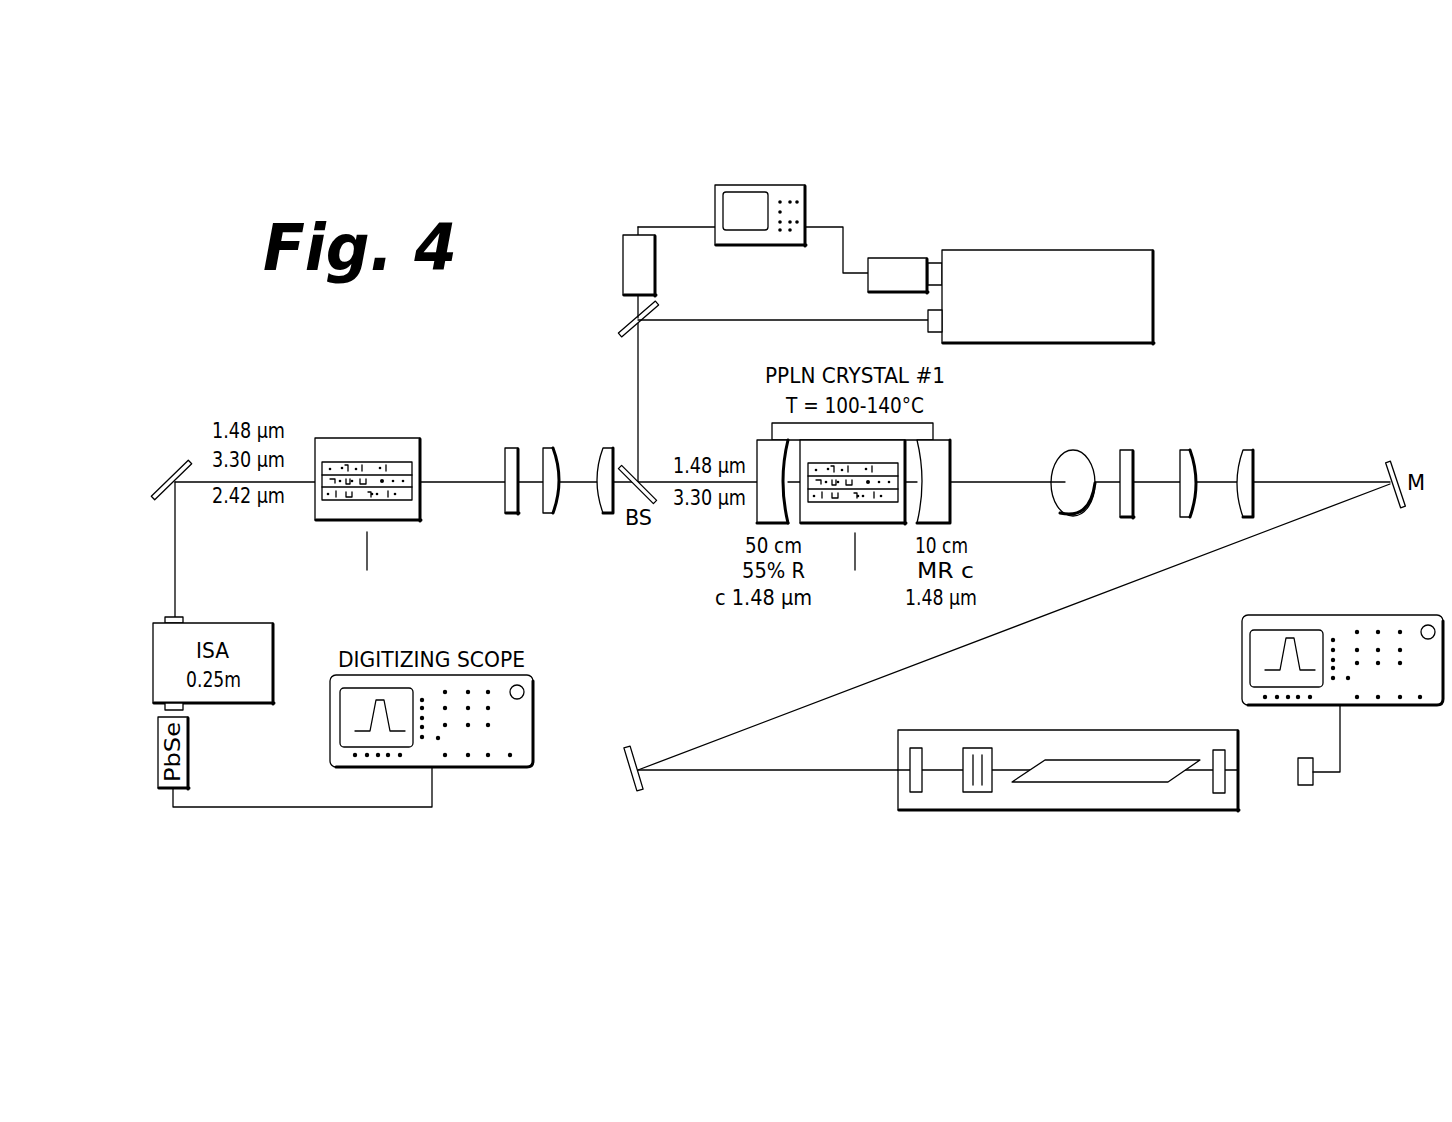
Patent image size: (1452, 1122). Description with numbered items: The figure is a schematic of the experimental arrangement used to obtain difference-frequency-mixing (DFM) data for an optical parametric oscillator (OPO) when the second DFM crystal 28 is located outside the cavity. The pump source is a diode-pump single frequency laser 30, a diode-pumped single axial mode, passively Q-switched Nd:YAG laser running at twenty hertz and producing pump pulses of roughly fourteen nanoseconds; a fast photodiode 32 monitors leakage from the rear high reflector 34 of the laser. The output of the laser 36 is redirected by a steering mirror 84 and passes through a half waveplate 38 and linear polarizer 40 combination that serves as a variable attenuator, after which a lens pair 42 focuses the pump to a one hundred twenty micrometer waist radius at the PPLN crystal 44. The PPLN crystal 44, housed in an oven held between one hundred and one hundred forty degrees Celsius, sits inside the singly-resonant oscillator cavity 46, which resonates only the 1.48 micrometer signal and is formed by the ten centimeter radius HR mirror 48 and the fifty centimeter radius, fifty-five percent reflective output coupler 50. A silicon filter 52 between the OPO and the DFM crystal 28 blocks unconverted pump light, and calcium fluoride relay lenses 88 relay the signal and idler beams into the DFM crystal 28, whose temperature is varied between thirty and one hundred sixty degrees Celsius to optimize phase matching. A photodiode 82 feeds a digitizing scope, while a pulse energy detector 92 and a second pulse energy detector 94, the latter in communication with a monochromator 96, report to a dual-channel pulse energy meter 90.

The DFM crystal 28 is at (388, 500).
The diode-pump single frequency laser 30 is at (917, 815).
The fast photodiode 32 is at (1408, 708).
The rear high reflector 34 is at (1218, 793).
The output of the laser 36 is at (875, 772).
The half waveplate 38 is at (1125, 518).
The linear polarizer 40 is at (1070, 515).
The lens pair 42 is at (1180, 517).
The PPLN crystal 44 is at (898, 470).
The singly-resonant oscillator cavity 46 is at (772, 432).
The HR mirror 48 is at (950, 503).
The output coupler 50 is at (757, 512).
The silicon filter 52 is at (512, 515).
The photodiode 82 is at (1305, 757).
The steering mirror 84 is at (630, 785).
The relay lenses 88 is at (550, 515).
The dual-channel pulse energy meter 90 is at (760, 185).
The pulse energy detector 92 is at (623, 262).
The second pulse energy detector 94 is at (897, 258).
The monochromator 96 is at (1077, 250).